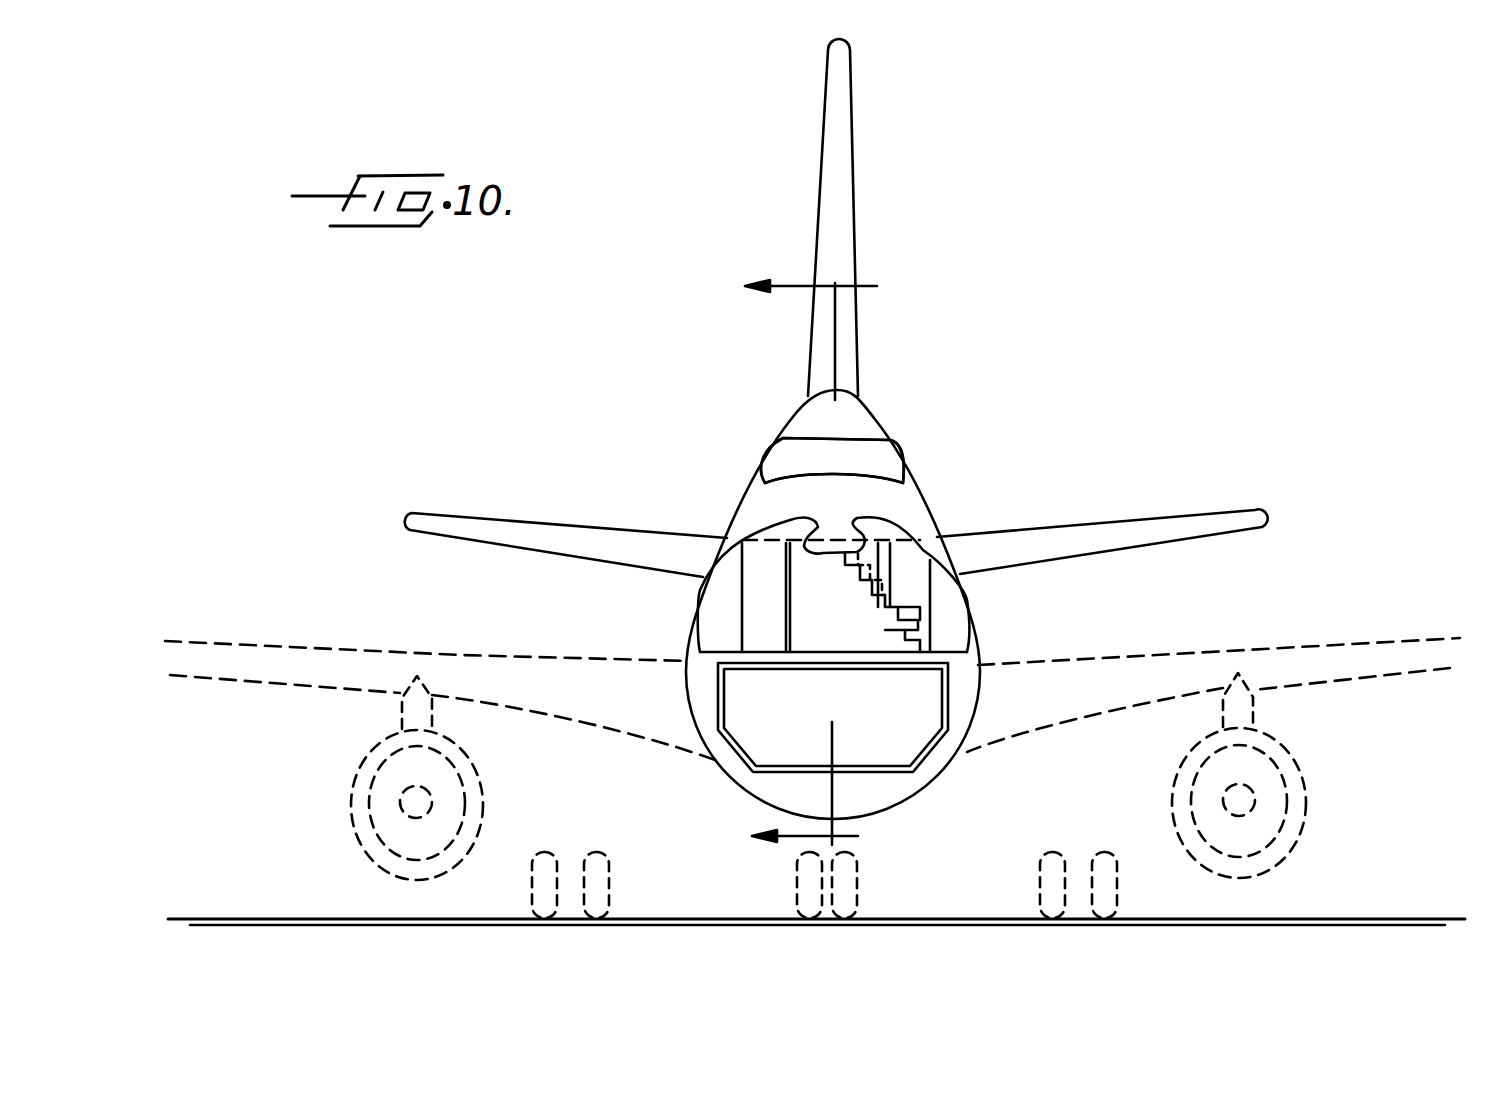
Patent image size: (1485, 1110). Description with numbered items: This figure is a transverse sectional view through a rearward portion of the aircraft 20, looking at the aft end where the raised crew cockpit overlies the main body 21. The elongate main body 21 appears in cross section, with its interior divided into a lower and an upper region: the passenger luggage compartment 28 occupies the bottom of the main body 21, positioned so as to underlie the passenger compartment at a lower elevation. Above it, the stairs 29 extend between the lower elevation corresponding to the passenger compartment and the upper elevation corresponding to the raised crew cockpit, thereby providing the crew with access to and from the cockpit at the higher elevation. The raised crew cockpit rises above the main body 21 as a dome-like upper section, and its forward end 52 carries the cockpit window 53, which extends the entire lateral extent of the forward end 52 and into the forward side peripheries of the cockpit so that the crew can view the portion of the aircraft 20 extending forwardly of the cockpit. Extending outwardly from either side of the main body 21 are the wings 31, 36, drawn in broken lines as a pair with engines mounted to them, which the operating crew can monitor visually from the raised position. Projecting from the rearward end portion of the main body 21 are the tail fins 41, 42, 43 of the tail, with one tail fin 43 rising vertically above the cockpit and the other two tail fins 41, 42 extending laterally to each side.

The aircraft 20 is at (1113, 257).
The main body 21 is at (700, 604).
The passenger luggage compartment 28 is at (833, 717).
The stairs 29 is at (960, 620).
The wing 31 is at (1158, 655).
The wing 36 is at (460, 655).
The tail fin 41 is at (540, 515).
The tail fin 42 is at (1068, 523).
The tail fin 43 is at (857, 228).
The forward end of the raised crew cockpit 52 is at (832, 441).
The cockpit window 53 is at (893, 463).